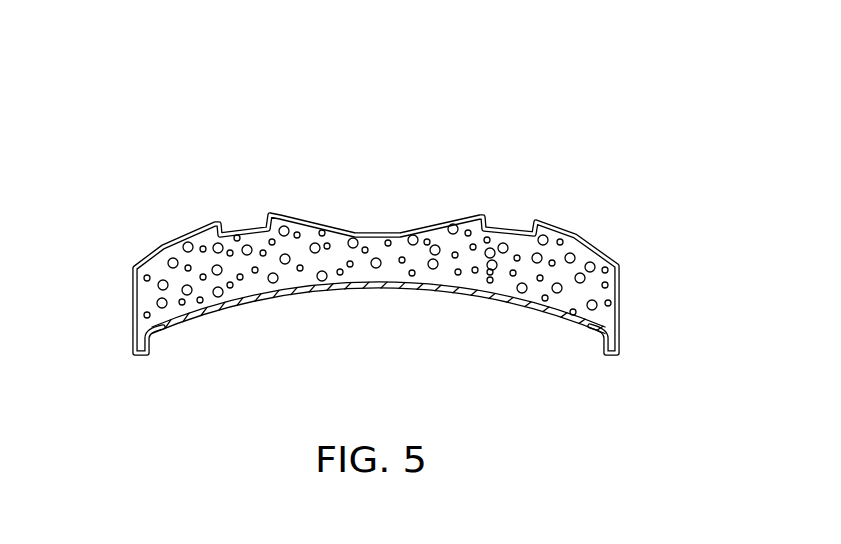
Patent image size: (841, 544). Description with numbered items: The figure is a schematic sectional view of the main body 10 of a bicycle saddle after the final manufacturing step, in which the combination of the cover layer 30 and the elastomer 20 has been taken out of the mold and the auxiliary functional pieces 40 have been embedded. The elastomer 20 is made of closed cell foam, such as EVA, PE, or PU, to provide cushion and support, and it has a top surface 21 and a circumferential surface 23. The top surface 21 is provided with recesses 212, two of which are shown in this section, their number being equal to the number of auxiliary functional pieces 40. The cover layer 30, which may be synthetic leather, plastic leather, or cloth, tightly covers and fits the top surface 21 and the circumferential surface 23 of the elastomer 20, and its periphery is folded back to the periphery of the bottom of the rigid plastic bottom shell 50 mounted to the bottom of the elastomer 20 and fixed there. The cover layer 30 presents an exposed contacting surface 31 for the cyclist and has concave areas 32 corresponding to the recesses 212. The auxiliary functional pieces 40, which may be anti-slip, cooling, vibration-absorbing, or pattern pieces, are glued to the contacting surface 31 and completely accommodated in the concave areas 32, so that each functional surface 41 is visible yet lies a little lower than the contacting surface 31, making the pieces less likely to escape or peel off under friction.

The main body 10 is at (673, 146).
The elastomer 20 is at (412, 241).
The top surface 21 is at (583, 237).
The recesses 212 is at (256, 231).
The circumferential surface 23 is at (134, 288).
The cover layer 30 is at (132, 312).
The contacting surface 31 is at (181, 237).
The concave areas 32 is at (257, 227).
The auxiliary functional pieces 40 is at (231, 227).
The functional surface 41 is at (242, 224).
The bottom shell 50 is at (430, 289).